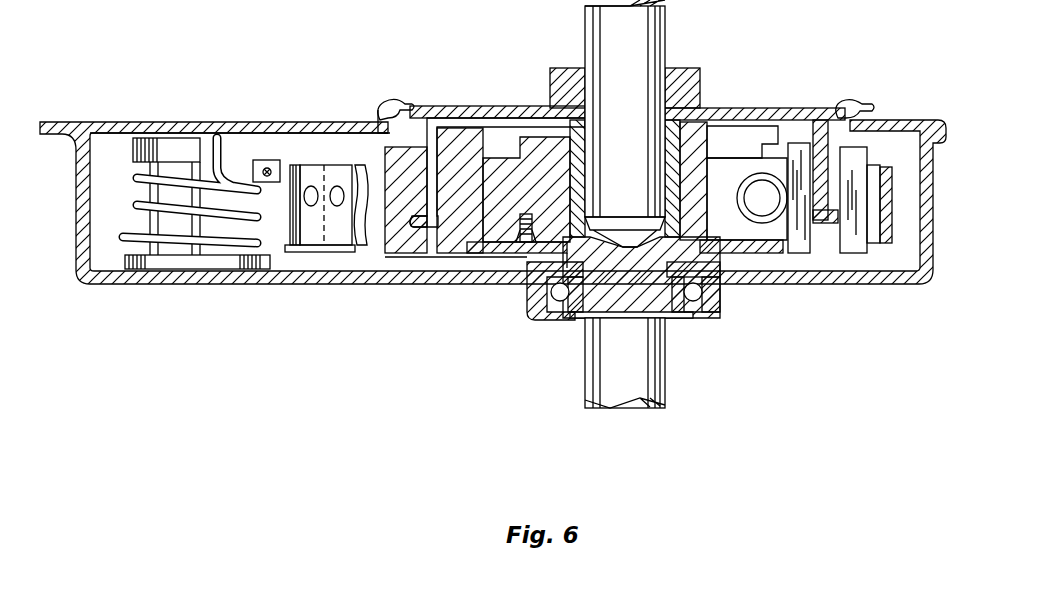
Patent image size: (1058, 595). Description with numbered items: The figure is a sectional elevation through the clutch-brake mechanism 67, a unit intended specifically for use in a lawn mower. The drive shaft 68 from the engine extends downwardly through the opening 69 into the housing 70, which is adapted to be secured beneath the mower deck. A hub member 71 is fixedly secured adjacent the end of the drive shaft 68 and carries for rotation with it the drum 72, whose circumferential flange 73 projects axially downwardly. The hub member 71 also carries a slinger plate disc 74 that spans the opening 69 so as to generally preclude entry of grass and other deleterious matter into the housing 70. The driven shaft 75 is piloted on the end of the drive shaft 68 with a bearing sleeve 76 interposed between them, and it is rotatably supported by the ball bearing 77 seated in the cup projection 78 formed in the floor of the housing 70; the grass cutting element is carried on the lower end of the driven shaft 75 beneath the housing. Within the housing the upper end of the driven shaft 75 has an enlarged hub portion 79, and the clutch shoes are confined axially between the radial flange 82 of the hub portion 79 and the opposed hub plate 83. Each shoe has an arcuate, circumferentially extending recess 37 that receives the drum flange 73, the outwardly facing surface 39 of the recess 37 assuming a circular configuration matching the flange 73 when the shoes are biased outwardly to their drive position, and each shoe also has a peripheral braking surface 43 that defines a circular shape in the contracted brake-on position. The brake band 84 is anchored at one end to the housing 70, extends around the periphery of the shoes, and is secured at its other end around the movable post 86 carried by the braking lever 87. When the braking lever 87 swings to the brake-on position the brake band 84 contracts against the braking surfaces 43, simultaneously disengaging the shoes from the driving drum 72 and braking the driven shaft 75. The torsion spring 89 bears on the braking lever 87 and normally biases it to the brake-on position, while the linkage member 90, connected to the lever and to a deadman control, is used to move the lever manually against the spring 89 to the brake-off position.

The arcuate circumferentially extending recess 37 is at (420, 226).
The outwardly facing surface 39 is at (443, 205).
The peripheral braking surface 43 is at (383, 222).
The clutch-brake mechanism 67 is at (352, 42).
The drive shaft 68 is at (668, 30).
The opening 69 is at (840, 118).
The housing 70 is at (930, 214).
The hub member 71 is at (700, 78).
The drum 72 is at (452, 117).
The circumferential flange 73 is at (427, 104).
The slinger plate disc 74 is at (480, 105).
The driven shaft 75 is at (668, 366).
The bearing sleeve 76 is at (575, 150).
The ball bearing 77 is at (562, 300).
The cup projection 78 is at (530, 296).
The enlarged hub portion 79 is at (692, 212).
The radial flange 82 is at (735, 133).
The hub plate 83 is at (770, 243).
The brake band 84 is at (338, 235).
The movable post 86 is at (300, 247).
The braking lever 87 is at (280, 143).
The torsion spring 89 is at (208, 230).
The linkage member 90 is at (265, 170).